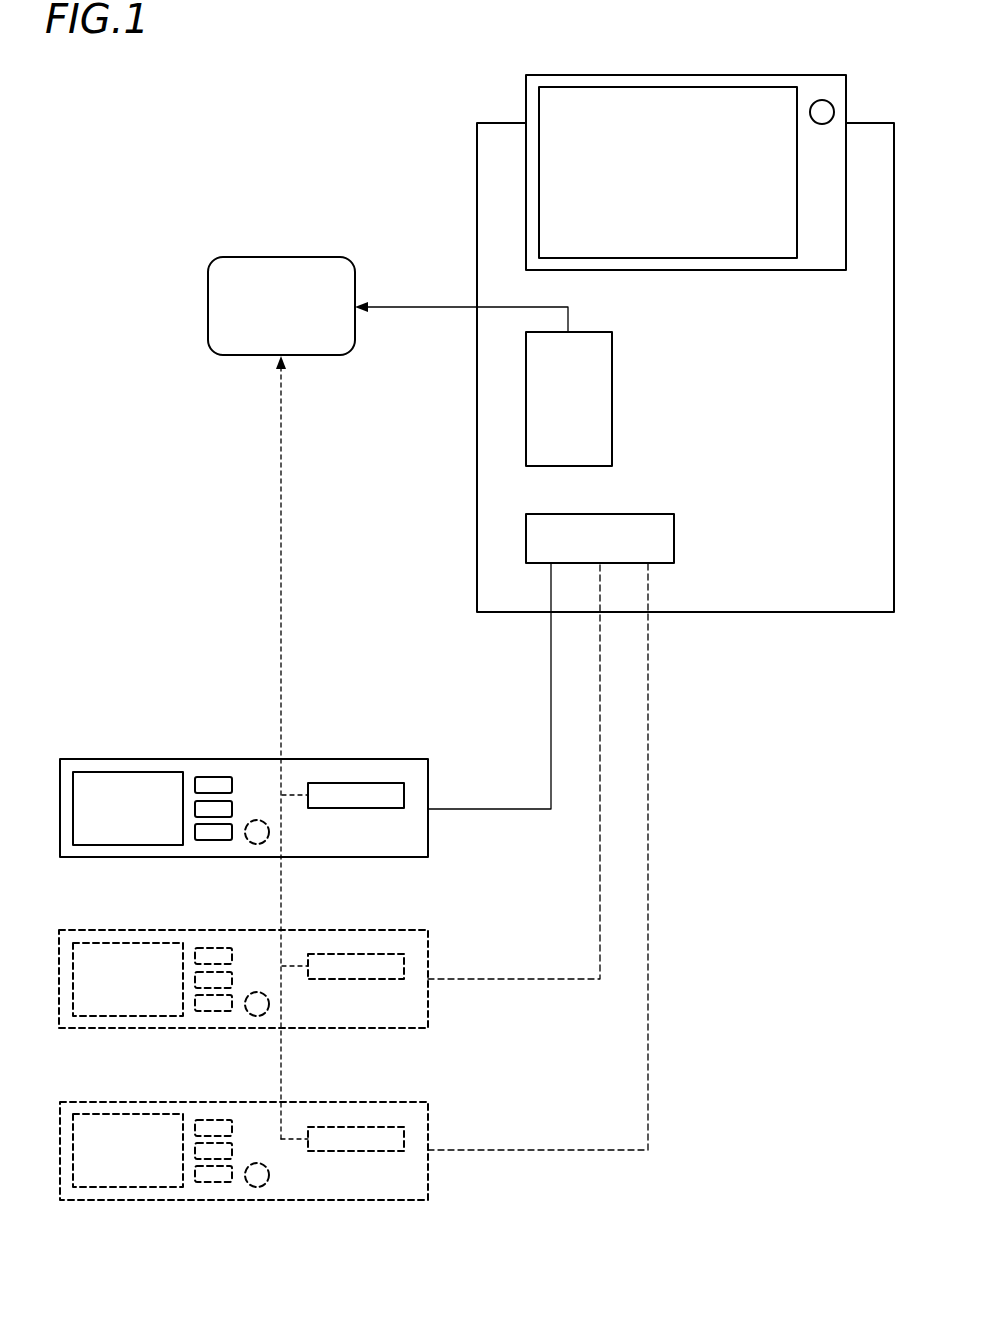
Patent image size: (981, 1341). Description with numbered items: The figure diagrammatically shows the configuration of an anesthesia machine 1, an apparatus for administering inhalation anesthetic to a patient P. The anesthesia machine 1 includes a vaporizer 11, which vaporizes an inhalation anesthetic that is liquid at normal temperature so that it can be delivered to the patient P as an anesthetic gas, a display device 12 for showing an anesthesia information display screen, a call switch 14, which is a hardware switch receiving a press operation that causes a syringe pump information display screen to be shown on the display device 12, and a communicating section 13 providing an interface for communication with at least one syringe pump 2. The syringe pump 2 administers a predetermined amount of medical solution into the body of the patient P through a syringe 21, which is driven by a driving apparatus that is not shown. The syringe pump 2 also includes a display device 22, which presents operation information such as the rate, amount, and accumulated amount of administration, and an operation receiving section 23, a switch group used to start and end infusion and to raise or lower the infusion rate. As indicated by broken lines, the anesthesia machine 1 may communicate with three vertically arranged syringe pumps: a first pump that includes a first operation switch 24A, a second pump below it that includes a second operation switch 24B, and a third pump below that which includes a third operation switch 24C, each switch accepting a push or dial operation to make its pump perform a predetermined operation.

The anesthesia machine 1 is at (462, 56).
The vaporizer 11 is at (535, 410).
The display device 12 is at (620, 80).
The communicating section 13 is at (530, 537).
The call switch 14 is at (830, 108).
The patient P is at (237, 257).
The syringe pump 2 is at (88, 733).
The syringe 21 is at (375, 794).
The display device 22 is at (158, 778).
The operation receiving section 23 is at (211, 852).
The first operation switch 24A is at (257, 846).
The second operation switch 24B is at (257, 1018).
The third operation switch 24C is at (257, 1190).